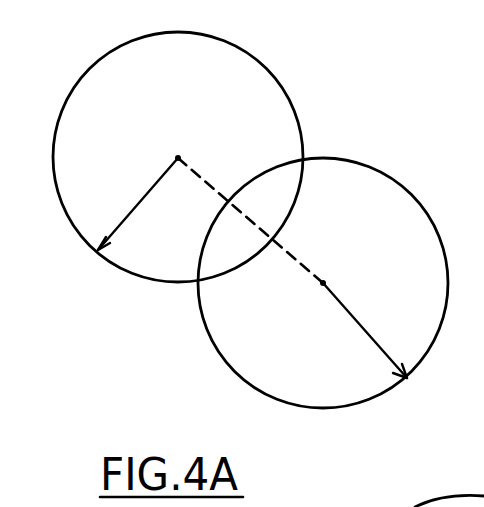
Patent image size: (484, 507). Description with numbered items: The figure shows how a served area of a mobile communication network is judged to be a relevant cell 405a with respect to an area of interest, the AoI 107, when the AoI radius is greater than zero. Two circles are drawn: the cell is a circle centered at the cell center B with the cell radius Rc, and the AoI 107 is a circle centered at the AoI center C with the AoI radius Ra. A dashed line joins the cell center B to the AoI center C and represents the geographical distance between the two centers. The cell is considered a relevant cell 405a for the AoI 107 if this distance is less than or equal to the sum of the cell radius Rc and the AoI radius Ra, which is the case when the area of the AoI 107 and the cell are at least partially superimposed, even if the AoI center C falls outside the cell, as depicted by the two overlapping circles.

The relevant cell 405a is at (283, 87).
The AoI 107 is at (413, 197).
The cell center B is at (179, 145).
The AoI center C is at (314, 291).
The cell radius Rc is at (138, 204).
The AoI radius Ra is at (365, 330).